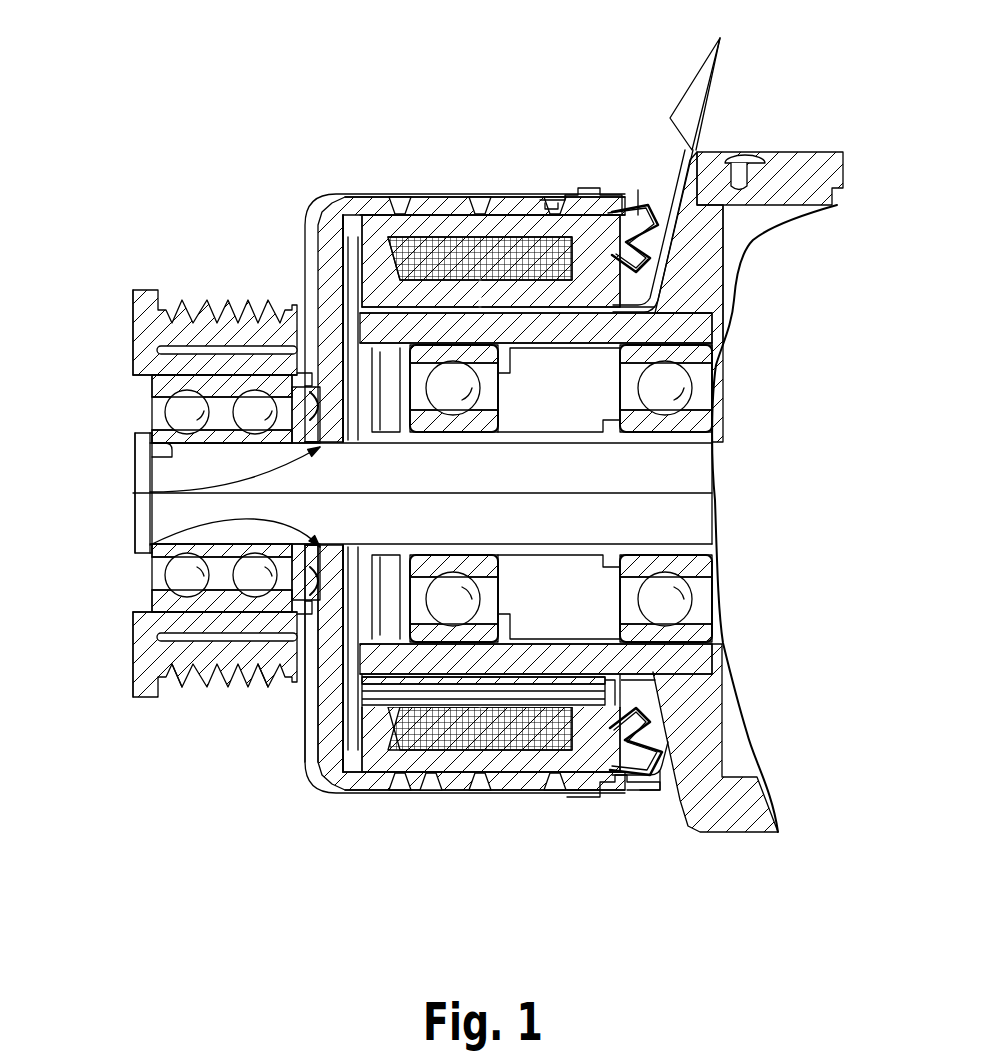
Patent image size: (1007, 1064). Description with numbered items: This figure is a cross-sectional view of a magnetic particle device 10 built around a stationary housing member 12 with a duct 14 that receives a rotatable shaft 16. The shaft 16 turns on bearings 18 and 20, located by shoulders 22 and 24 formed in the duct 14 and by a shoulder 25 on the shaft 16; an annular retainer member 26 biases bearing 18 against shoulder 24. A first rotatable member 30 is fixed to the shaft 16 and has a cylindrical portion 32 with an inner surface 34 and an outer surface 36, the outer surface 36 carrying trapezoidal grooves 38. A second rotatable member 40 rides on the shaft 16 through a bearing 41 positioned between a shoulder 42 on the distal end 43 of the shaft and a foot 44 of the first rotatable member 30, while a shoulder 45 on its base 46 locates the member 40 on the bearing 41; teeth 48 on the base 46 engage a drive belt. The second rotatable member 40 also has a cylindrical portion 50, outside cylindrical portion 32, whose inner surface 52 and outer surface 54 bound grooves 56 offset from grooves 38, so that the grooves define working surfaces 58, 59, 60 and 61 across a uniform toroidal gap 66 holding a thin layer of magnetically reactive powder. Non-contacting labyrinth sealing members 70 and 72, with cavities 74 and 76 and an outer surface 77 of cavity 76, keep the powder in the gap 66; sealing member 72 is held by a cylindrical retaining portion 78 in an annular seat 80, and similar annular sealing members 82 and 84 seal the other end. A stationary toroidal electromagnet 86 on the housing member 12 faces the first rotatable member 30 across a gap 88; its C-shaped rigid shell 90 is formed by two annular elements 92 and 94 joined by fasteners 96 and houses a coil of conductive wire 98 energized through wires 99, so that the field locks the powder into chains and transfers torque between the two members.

The magnetic particle device 10 is at (770, 87).
The stationary housing member 12 is at (800, 165).
The duct 14 is at (567, 617).
The rotatable shaft 16 is at (680, 470).
The bearing 18 is at (478, 543).
The bearing 20 is at (693, 633).
The shoulder 22 is at (640, 357).
The shoulder 24 is at (565, 570).
The shoulder 25 is at (680, 450).
The annular retainer member 26 is at (220, 403).
The first rotatable member 30 is at (140, 492).
The cylindrical portion 32 is at (345, 197).
The inner surface 34 is at (360, 203).
The outer surface 36 is at (335, 228).
The grooves 38 is at (397, 207).
The second rotatable member 40 is at (140, 288).
The bearing 41 is at (170, 428).
The shoulder 42 is at (140, 457).
The distal end 43 is at (142, 520).
The foot 44 is at (120, 560).
The shoulder 45 is at (300, 598).
The base 46 is at (147, 648).
The teeth 48 is at (183, 667).
The cylindrical portion 50 is at (495, 790).
The inner surface 52 is at (345, 790).
The outer surface 54 is at (390, 790).
The grooves 56 is at (430, 790).
The working surface 58 is at (420, 207).
The working surface 59 is at (457, 203).
The working surface 60 is at (497, 200).
The working surface 61 is at (530, 200).
The gap 66 is at (640, 790).
The sealing member 70 is at (590, 790).
The sealing member 72 is at (660, 790).
The cavity 74 is at (590, 187).
The cavity 76 is at (648, 212).
The outer surface 77 is at (638, 190).
The cylindrical retaining portion 78 is at (563, 187).
The annular seat 80 is at (560, 193).
The annular sealing member 82 is at (318, 382).
The annular sealing member 84 is at (300, 378).
The stationary toroidal electromagnet 86 is at (620, 275).
The gap 88 is at (605, 740).
The rigid shell 90 is at (680, 388).
The annular element 92 is at (545, 293).
The annular element 94 is at (380, 287).
The fasteners 96 is at (300, 700).
The coil of conductive wire 98 is at (565, 247).
The wires 99 is at (719, 40).